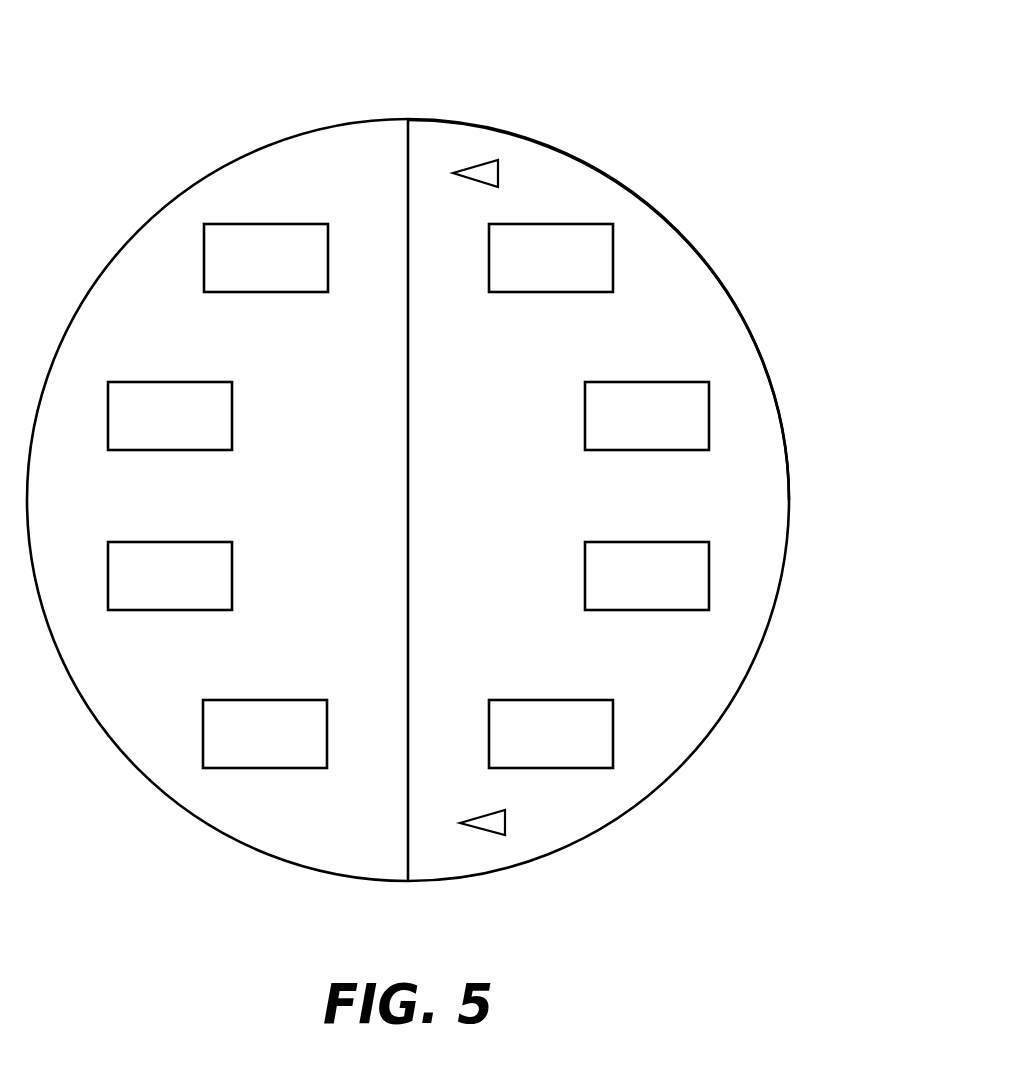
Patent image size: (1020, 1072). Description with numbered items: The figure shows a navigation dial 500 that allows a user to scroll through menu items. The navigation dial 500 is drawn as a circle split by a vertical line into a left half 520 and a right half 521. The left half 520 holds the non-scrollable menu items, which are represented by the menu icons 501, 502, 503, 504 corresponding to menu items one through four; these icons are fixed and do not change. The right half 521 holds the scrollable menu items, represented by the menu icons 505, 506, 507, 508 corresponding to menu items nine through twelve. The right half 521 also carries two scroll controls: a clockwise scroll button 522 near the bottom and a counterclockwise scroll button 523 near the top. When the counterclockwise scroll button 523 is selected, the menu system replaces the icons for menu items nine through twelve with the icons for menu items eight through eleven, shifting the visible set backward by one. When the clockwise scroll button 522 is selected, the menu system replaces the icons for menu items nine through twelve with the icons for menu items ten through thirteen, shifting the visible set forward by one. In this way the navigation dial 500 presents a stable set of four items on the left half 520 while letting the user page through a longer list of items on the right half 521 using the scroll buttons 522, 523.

The navigation dial 500 is at (789, 500).
The left half 520 is at (340, 123).
The right half 521 is at (475, 122).
The counterclockwise scroll button 523 is at (493, 162).
The clockwise scroll button 522 is at (497, 837).
The menu icon 501 is at (297, 292).
The menu icon 502 is at (232, 420).
The menu icon 503 is at (232, 578).
The menu icon 504 is at (293, 700).
The menu icon 505 is at (520, 700).
The menu icon 506 is at (585, 580).
The menu icon 507 is at (585, 423).
The menu icon 508 is at (520, 292).